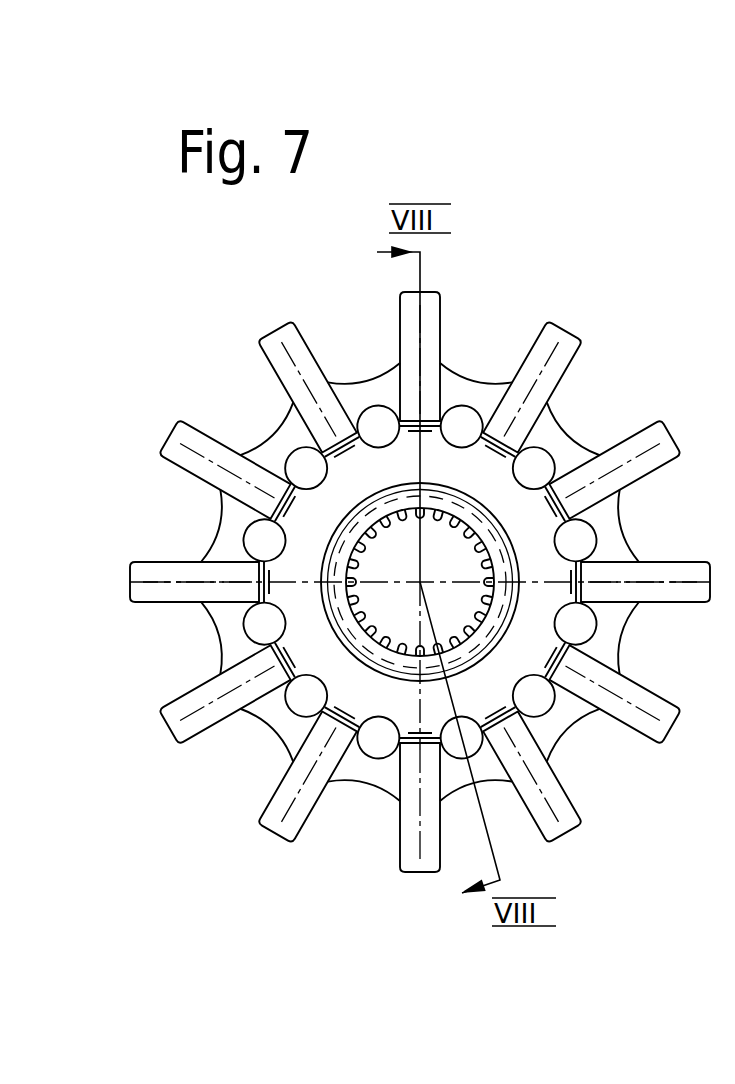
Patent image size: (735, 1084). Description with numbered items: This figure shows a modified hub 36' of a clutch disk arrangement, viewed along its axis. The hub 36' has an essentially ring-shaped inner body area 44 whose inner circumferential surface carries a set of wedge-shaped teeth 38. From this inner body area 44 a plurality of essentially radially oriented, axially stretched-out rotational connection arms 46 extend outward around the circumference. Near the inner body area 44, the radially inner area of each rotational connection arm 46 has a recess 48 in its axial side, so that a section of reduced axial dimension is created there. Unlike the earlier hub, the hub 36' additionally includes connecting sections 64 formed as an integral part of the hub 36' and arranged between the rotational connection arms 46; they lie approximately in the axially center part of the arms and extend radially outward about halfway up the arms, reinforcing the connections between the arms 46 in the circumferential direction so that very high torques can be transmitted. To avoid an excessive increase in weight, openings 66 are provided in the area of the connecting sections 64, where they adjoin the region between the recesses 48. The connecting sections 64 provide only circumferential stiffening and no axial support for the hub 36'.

The modified hub 36' is at (407, 564).
The set of wedge-shaped teeth 38 is at (382, 551).
The inner body area 44 is at (360, 688).
The rotational connection arm 46 is at (562, 332).
The recess 48 is at (267, 822).
The connecting section 64 is at (472, 397).
The opening 66 is at (538, 453).